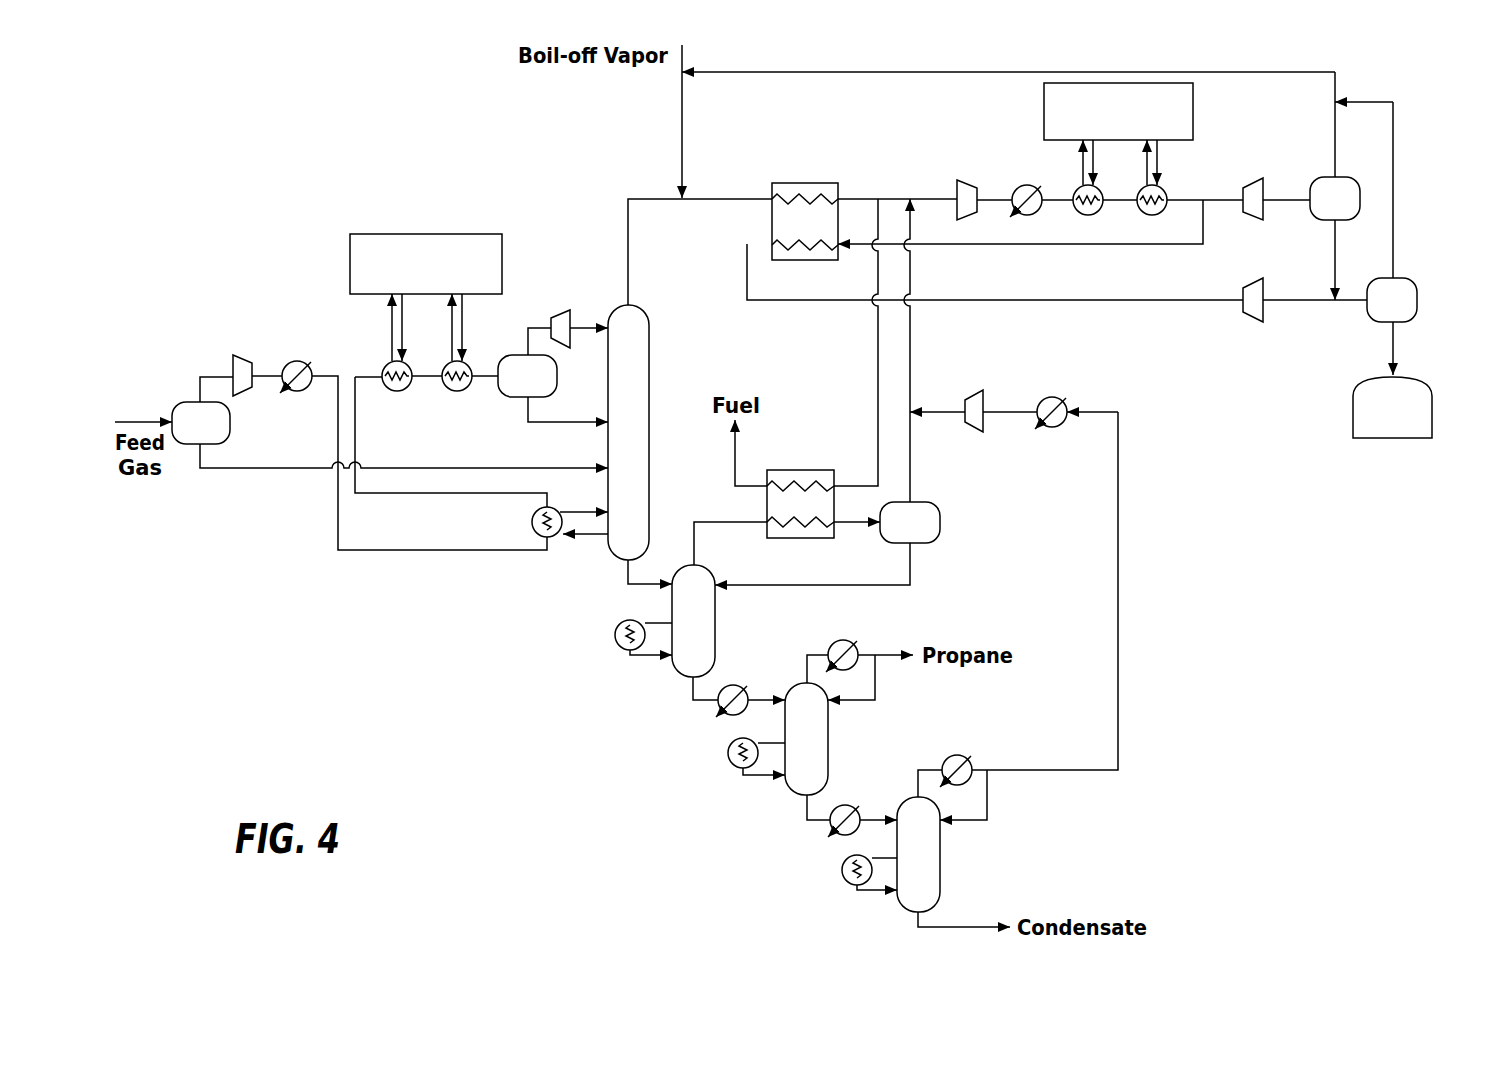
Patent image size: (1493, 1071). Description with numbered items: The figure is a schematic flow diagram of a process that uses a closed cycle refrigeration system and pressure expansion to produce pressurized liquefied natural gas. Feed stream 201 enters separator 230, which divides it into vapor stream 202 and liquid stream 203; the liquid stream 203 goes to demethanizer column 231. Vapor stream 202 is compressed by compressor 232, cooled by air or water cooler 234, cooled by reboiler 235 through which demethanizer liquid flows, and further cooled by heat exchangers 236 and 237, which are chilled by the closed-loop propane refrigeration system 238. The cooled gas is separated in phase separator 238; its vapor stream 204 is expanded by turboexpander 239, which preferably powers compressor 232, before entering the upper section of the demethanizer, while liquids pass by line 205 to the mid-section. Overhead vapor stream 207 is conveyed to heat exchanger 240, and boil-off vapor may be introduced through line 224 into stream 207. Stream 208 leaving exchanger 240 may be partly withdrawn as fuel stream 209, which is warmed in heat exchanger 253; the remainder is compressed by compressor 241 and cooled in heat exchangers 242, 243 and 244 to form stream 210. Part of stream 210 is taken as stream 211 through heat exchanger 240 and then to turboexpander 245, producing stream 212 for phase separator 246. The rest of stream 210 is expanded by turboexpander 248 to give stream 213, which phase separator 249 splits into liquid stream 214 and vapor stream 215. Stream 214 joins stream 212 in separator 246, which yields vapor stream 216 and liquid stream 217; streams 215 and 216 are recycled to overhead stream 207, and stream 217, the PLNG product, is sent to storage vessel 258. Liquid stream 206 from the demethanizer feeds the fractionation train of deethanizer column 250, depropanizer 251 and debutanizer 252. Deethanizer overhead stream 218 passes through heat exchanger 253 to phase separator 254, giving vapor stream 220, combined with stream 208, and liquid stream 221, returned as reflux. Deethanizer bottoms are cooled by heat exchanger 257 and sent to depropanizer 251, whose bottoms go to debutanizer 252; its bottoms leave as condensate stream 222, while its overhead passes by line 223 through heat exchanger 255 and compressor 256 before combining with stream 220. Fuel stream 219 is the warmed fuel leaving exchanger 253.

The feed stream 201 is at (125, 425).
The vapor stream 202 is at (212, 374).
The liquid stream 203 is at (268, 474).
The vapor stream 204 is at (526, 337).
The line 205 is at (562, 424).
The liquid stream 206 is at (628, 570).
The overhead vapor stream 207 is at (628, 230).
The stream 208 is at (864, 196).
The fuel stream 209 is at (878, 377).
The stream 210 is at (1180, 200).
The stream 211 is at (1046, 244).
The stream 212 is at (1287, 300).
The stream 213 is at (1283, 200).
The liquid stream 214 is at (1331, 272).
The vapor stream 215 is at (1331, 134).
The vapor stream 216 is at (1393, 196).
The liquid stream 217 is at (1393, 352).
The vapor overhead stream 218 is at (724, 524).
The fuel gas stream 219 is at (735, 470).
The vapor stream 220 is at (910, 473).
The liquid stream 221 is at (796, 585).
The liquid condensate stream 222 is at (958, 927).
The line 223 is at (1118, 570).
The line 224 is at (682, 129).
The separator 230 is at (181, 395).
The demethanizer column 231 is at (649, 352).
The compressor 232 is at (249, 355).
The cooler 234 is at (305, 363).
The reboiler 235 is at (526, 528).
The heat exchanger 236 is at (392, 391).
The heat exchanger 237 is at (452, 391).
The refrigeration system / phase separator 238 is at (350, 250).
The turboexpander 239 is at (556, 314).
The heat exchanger 240 is at (790, 183).
The compressor 241 is at (957, 187).
The heat exchanger 242 is at (1019, 187).
The heat exchanger 243 is at (1084, 215).
The heat exchanger 244 is at (1147, 215).
The turboexpander 245 is at (1250, 289).
The phase separator 246 is at (1417, 288).
The turboexpander 248 is at (1255, 186).
The phase separator 249 is at (1328, 177).
The deethanizer column 250 is at (715, 644).
The depropanizer 251 is at (828, 763).
The debutanizer 252 is at (940, 881).
The heat exchanger 253 is at (808, 470).
The phase separator 254 is at (940, 520).
The heat exchanger 255 is at (1044, 398).
The compressor 256 is at (969, 398).
The heat exchanger 257 is at (727, 690).
The storage vessel 258 is at (1353, 416).